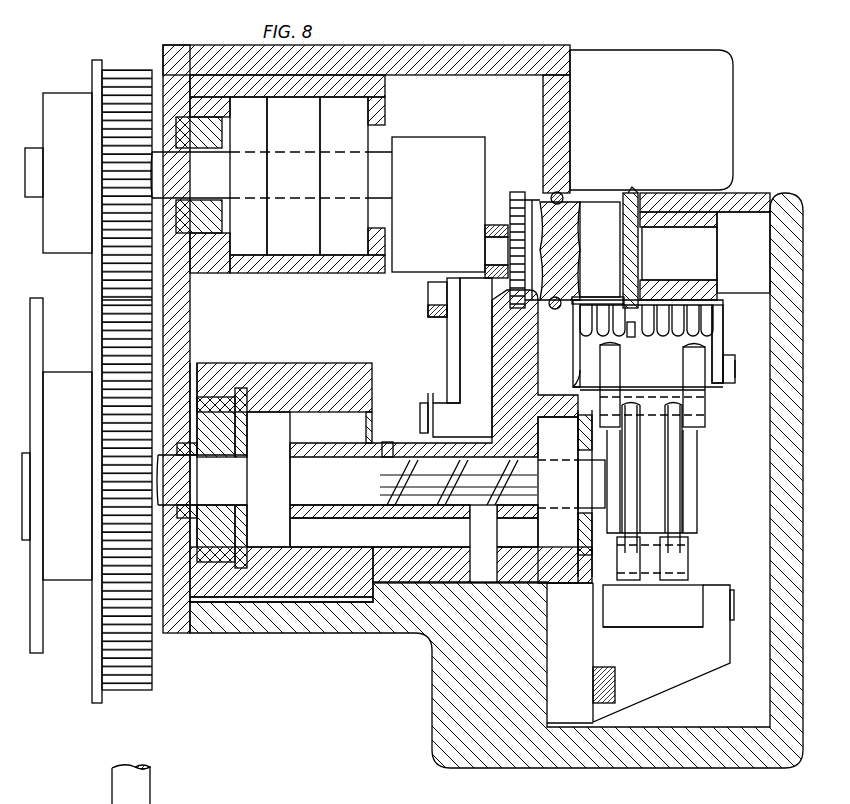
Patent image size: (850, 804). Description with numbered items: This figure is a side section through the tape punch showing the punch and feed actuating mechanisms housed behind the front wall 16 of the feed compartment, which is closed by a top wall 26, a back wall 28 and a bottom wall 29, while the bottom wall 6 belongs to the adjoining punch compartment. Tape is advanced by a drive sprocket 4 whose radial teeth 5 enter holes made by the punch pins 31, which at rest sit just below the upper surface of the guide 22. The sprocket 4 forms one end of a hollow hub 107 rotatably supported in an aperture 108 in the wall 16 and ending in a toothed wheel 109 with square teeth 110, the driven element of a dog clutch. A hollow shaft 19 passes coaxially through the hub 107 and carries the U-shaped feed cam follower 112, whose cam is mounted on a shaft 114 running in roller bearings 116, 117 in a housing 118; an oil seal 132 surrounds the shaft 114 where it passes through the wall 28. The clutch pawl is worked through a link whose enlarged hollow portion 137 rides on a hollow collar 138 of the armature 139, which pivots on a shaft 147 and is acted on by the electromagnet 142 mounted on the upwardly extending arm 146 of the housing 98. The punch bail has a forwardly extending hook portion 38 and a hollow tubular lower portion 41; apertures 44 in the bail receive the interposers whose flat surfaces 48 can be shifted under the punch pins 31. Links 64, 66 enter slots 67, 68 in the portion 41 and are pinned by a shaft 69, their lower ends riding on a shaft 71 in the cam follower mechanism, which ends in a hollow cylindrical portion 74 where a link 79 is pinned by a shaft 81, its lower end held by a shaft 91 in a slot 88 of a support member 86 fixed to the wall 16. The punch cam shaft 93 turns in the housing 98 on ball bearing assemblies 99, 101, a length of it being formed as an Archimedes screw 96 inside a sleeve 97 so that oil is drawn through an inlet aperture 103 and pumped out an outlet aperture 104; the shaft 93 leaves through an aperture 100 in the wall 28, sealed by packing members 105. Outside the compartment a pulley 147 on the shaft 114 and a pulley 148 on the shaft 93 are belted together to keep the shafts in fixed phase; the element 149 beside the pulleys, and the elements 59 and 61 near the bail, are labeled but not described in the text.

The drive sprocket 4 is at (637, 246).
The teeth 5 is at (640, 190).
The bottom wall 6 is at (648, 760).
The front wall 16 is at (570, 100).
The hollow shaft 19 is at (500, 252).
The guide 22 is at (712, 290).
The top wall 26 is at (535, 50).
The back wall 28 is at (180, 632).
The bottom wall 29 is at (308, 627).
The punch pins 31 is at (150, 776).
The hook portion 38 is at (722, 310).
The hollow tubular lower portion 41 is at (675, 376).
The apertures 44 is at (715, 331).
The flat surfaces 48 is at (648, 330).
The plate 59 is at (578, 375).
The side plate 61 is at (722, 350).
The link 64 is at (612, 352).
The link 66 is at (708, 388).
The slot 67 is at (603, 378).
The slot 68 is at (735, 362).
The shaft 69 is at (735, 375).
The shaft 71 is at (708, 415).
The hollow cylindrical portion 74 is at (690, 561).
The link 79 is at (675, 614).
The shaft 81 is at (690, 545).
The support member 86 is at (648, 659).
The slot 88 is at (675, 627).
The shaft 91 is at (737, 618).
The shaft 93 is at (330, 488).
The Archimedes screw 96 is at (480, 493).
The sleeve 97 is at (420, 515).
The housing 98 is at (318, 366).
The ball bearing assembly 99 is at (276, 441).
The aperture 100 is at (175, 458).
The ball bearing assembly 101 is at (572, 448).
The inlet aperture 103 is at (470, 540).
The outlet aperture 104 is at (385, 460).
The shaft packing members 105 is at (238, 458).
The hollow hub 107 is at (605, 234).
The aperture 108 is at (565, 198).
The toothed wheel 109 is at (535, 198).
The square teeth 110 is at (515, 192).
The feed cam follower 112 is at (456, 170).
The shaft 114 is at (292, 162).
The roller bearing 116 is at (258, 129).
The roller bearing 117 is at (355, 134).
The housing 118 is at (295, 278).
The oil seal 132 is at (203, 148).
The enlarged hollow portion 137 is at (497, 226).
The hollow collar 138 is at (484, 232).
The armature 139 is at (465, 322).
The electromagnet 142 is at (457, 360).
The upwardly extending arm 146 is at (505, 333).
The pulley 147 is at (75, 100).
The pulley 148 is at (75, 380).
The gear teeth 149 is at (105, 300).